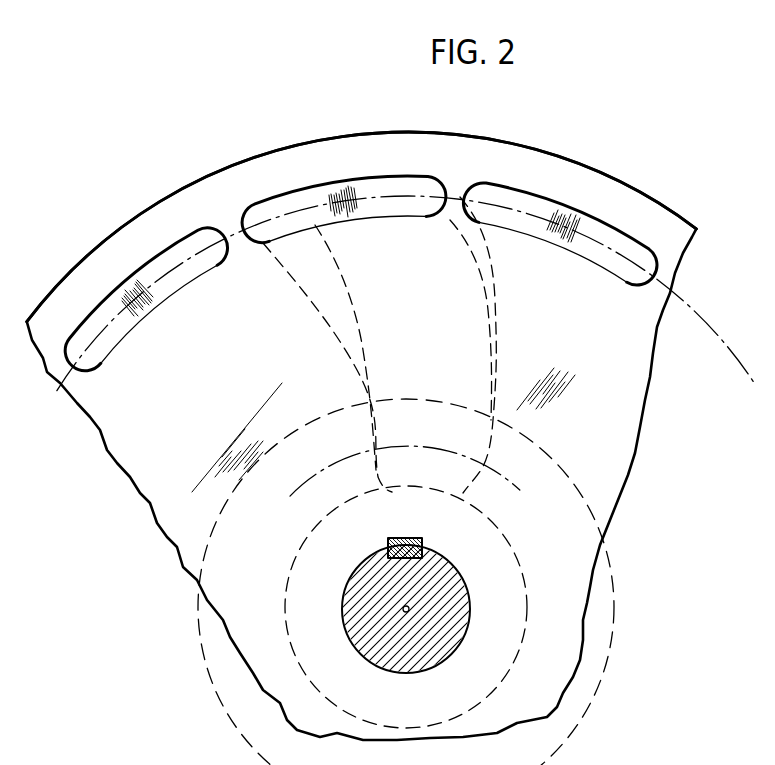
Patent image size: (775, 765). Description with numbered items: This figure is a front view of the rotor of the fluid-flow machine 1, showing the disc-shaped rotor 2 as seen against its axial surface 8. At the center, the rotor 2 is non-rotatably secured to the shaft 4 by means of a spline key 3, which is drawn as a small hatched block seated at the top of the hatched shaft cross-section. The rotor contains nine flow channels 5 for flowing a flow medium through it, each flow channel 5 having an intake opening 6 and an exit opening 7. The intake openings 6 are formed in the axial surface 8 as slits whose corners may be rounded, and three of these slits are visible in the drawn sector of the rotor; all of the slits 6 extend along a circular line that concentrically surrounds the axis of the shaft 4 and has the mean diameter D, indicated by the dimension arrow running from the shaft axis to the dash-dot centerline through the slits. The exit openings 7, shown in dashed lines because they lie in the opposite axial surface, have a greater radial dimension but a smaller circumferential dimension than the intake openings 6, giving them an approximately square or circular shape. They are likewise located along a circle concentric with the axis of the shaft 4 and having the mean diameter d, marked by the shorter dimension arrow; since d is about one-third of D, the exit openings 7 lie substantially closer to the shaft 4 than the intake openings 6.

The fluid-flow machine 1 is at (298, 142).
The rotor disc 2 is at (528, 177).
The spline key 3 is at (423, 543).
The shaft 4 is at (438, 620).
The flow channels 5 is at (447, 327).
The intake openings 6 is at (322, 200).
The exit openings 7 is at (438, 432).
The axial surface 8 is at (286, 361).
The mean diameter of intake-opening circle D is at (406, 609).
The mean diameter of exit-opening circle d is at (406, 609).